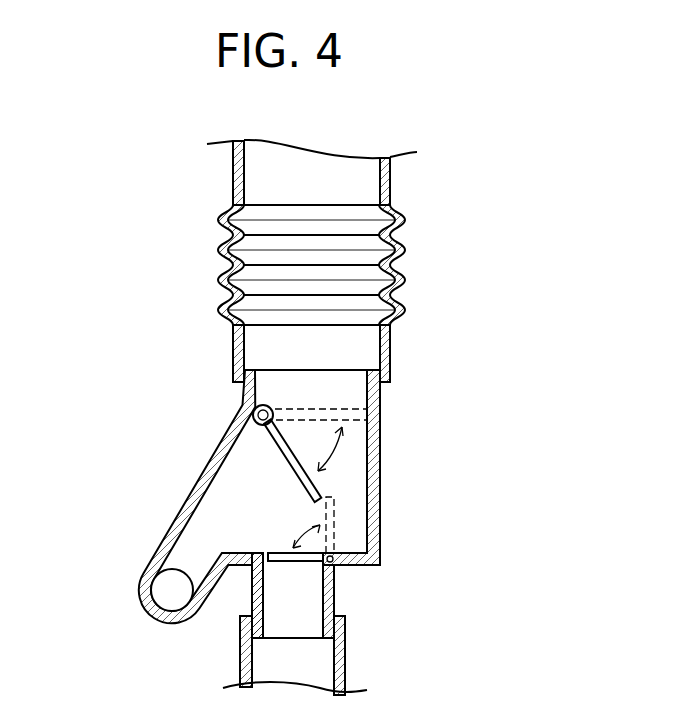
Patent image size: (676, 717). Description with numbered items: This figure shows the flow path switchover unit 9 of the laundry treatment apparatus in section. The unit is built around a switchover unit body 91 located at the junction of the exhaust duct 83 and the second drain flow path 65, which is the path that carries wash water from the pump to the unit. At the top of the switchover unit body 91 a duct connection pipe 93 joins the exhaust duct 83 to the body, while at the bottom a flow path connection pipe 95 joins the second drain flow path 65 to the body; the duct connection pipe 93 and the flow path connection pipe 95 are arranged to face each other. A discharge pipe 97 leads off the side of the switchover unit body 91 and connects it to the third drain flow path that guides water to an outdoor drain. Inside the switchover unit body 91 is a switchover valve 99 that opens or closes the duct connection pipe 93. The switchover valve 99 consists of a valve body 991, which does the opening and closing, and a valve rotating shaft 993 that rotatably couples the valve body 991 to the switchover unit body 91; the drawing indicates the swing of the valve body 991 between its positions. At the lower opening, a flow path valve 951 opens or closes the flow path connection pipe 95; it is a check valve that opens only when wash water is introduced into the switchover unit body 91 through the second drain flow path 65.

The exhaust duct 83 is at (233, 177).
The flow path switchover unit 9 is at (506, 190).
The switchover unit body 91 is at (380, 453).
The duct connection pipe 93 is at (277, 370).
The flow path connection pipe 95 is at (300, 605).
The flow path valve 951 is at (334, 527).
The discharge pipe 97 is at (163, 587).
The switchover valve 99 is at (122, 404).
The valve body 991 is at (283, 455).
The valve rotating shaft 993 is at (253, 412).
The second drain flow path 65 is at (240, 658).